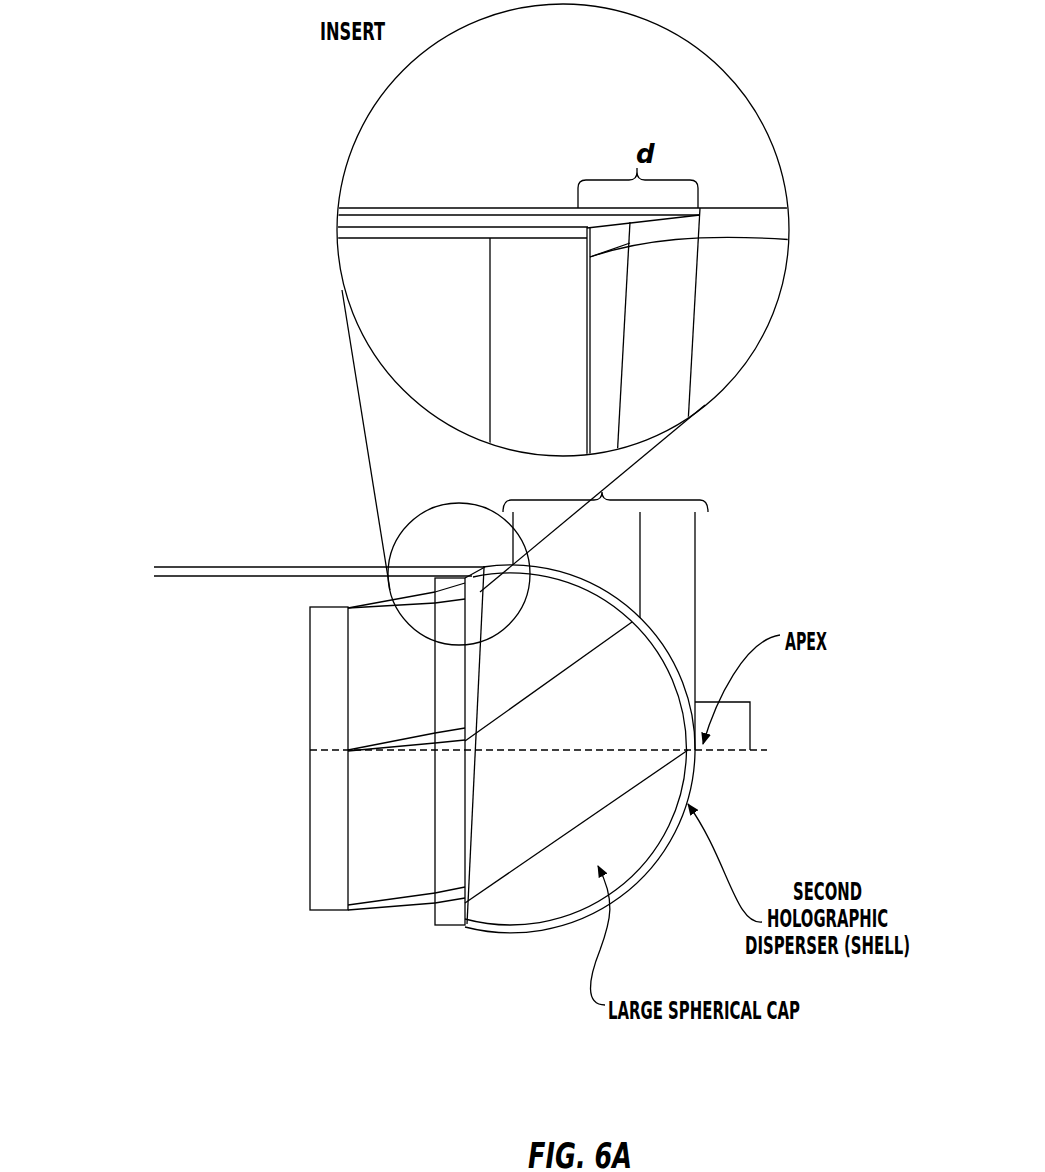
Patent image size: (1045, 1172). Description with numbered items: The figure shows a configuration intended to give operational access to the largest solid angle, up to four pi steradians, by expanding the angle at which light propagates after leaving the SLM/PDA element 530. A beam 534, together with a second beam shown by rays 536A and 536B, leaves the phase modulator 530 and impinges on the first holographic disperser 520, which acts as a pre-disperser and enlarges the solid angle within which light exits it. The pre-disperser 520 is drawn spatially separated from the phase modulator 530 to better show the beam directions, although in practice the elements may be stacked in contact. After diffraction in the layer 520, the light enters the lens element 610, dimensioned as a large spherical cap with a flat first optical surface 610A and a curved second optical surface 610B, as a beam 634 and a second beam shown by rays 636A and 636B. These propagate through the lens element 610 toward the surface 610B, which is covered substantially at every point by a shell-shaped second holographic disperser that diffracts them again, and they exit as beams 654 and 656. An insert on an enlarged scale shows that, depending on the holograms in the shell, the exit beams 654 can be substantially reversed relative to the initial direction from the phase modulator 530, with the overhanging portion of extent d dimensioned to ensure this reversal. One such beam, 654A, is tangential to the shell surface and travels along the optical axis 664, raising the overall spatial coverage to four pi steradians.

The first holographic disperser 520 is at (450, 932).
The SLM/PDA element 530 is at (302, 795).
The beam 534 is at (437, 893).
The ray of beam 536A is at (406, 757).
The ray of beam 536B is at (427, 908).
The lens element 610 is at (555, 810).
The first optical surface 610A is at (592, 408).
The second optical surface 610B is at (664, 675).
The beam 634 is at (480, 705).
The beam 636A is at (548, 681).
The beam 636B is at (576, 826).
The beam 654 is at (450, 238).
The beam tangential to the shell 654A is at (704, 206).
The beam 656 is at (605, 486).
The optical axis 664 is at (729, 753).